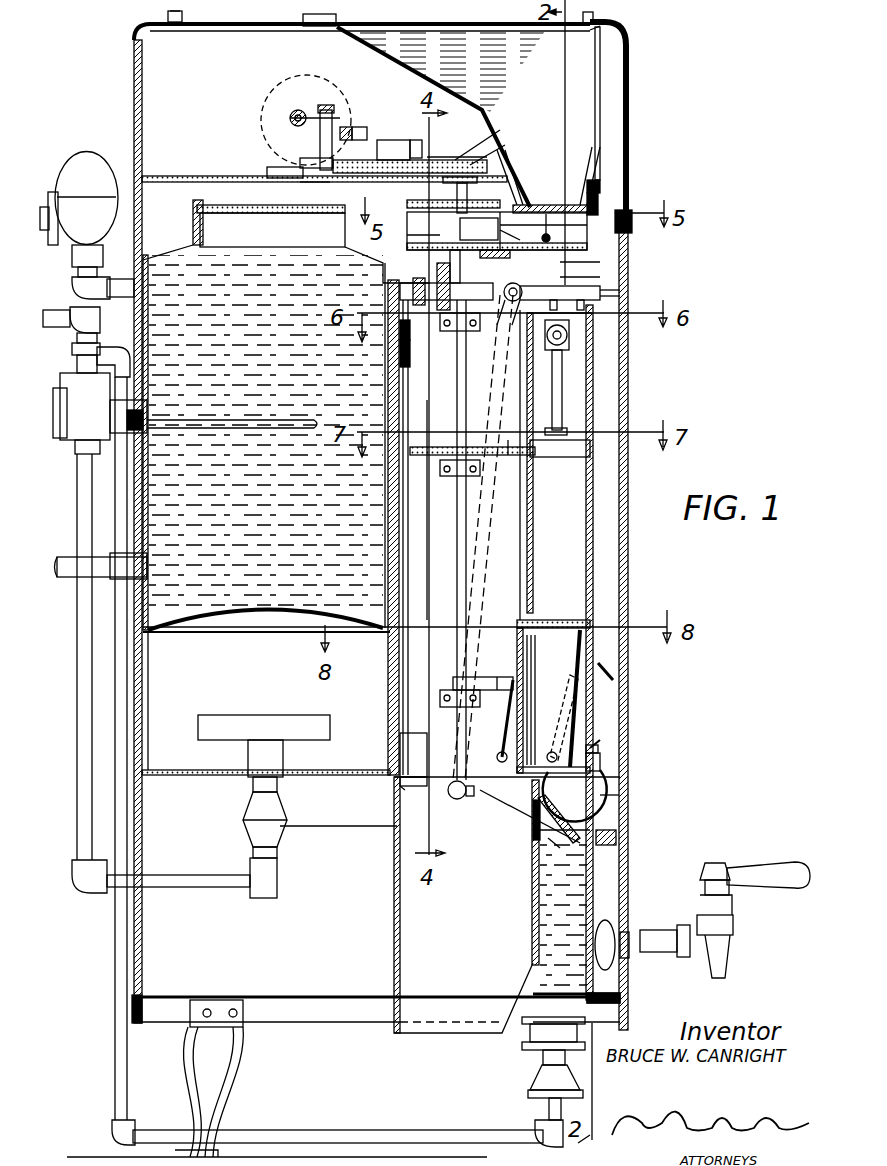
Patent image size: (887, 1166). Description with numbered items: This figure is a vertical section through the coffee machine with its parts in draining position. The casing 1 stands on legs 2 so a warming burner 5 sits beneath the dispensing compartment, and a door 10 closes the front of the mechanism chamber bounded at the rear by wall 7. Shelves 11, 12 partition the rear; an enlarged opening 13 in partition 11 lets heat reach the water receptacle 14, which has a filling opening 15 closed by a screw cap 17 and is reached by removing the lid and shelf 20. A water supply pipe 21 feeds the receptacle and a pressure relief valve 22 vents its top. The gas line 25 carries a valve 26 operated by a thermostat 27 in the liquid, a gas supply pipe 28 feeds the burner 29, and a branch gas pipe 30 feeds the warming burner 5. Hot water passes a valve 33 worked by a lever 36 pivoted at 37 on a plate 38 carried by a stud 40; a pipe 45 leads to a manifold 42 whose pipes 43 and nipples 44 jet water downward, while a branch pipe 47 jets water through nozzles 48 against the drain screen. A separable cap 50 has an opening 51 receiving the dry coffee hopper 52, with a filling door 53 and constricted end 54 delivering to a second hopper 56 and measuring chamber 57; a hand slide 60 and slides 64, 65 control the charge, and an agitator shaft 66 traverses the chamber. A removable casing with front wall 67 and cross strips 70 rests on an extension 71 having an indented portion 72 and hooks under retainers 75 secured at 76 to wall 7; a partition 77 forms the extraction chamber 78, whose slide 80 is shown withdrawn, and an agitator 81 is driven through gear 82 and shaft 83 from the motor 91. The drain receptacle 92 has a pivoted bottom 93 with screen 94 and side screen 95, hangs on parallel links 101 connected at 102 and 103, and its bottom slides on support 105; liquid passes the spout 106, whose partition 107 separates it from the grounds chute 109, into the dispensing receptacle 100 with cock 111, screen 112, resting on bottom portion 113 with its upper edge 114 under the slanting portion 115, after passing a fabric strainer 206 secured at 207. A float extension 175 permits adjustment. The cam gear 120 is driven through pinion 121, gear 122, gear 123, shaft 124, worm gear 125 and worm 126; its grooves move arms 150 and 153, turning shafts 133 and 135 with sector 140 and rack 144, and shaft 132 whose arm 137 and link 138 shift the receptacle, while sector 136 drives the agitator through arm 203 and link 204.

The casing 1 is at (132, 708).
The legs 2 is at (225, 1072).
The warming burner 5 is at (535, 1047).
The rear wall 7 is at (400, 588).
The door 10 is at (628, 582).
The partition 11 is at (152, 632).
The partition 12 is at (172, 775).
The enlarged opening 13 is at (250, 632).
The water receptacle 14 is at (228, 618).
The filling opening 15 is at (220, 228).
The screw cap 17 is at (205, 200).
The lid and shelf 20 is at (173, 176).
The water supply pipe 21 is at (68, 570).
The pressure relief valve 22 is at (80, 160).
The gas line 25 is at (50, 305).
The valve 26 is at (88, 425).
The thermostat 27 is at (185, 425).
The gas supply pipe 28 is at (84, 810).
The burner 29 is at (208, 715).
The branch gas pipe 30 is at (117, 965).
The valve 33 is at (446, 280).
The lever 36 is at (360, 127).
The pivot 37 is at (345, 127).
The plate 38 is at (380, 140).
The stud 40 is at (425, 148).
The manifold 42 is at (496, 325).
The pipes 43 is at (620, 290).
The nipples 44 is at (620, 296).
The pipe 45 is at (515, 283).
The pipe 47 is at (485, 548).
The nozzles 48 is at (466, 800).
The cap 50 is at (628, 55).
The opening 51 is at (605, 30).
The dry coffee hopper 52 is at (600, 80).
The filling door 53 is at (412, 30).
The constricted lower end 54 is at (598, 145).
The second hopper 56 is at (600, 200).
The measuring chamber 57 is at (600, 225).
The hand operable slide 60 is at (548, 200).
The slide 64 is at (440, 217).
The slide 65 is at (500, 246).
The agitator shaft 66 is at (543, 238).
The front wall 67 is at (595, 548).
The cross strips 70 is at (410, 360).
The extension 71 is at (420, 790).
The indented portion 72 is at (410, 786).
The retainers 75 is at (400, 350).
The securing means 76 is at (398, 333).
The partition 77 is at (522, 571).
The extraction chamber 78 is at (592, 385).
The slide 80 is at (510, 465).
The horizontal agitator 81 is at (592, 418).
The gear 82 is at (600, 342).
The horizontal shaft 83 is at (567, 340).
The motor 91 is at (261, 115).
The drain receptacle 92 is at (520, 628).
The pivoted bottom 93 is at (600, 768).
The screen 94 is at (595, 740).
The removable screen 95 is at (592, 708).
The dispensing receptacle 100 is at (535, 910).
The parallel links 101 is at (558, 710).
The link connection 102 is at (577, 680).
The link connection 103 is at (548, 757).
The bottom support 105 is at (610, 795).
The spout 106 is at (558, 845).
The partitioning portion 107 is at (545, 812).
The chute 109 is at (440, 1003).
The cock 111 is at (730, 945).
The screen 112 is at (625, 935).
The shelf-like bottom portion 113 is at (622, 1000).
The upper edge 114 is at (548, 825).
The slanting portion 115 is at (538, 835).
The cam gear 120 is at (392, 160).
The pinion 121 is at (300, 158).
The larger gear 122 is at (267, 168).
The small gear 123 is at (315, 182).
The shaft 124 is at (290, 125).
The worm gear 125 is at (322, 105).
The worm 126 is at (296, 110).
The shaft 132 is at (466, 552).
The shaft 133 is at (462, 237).
The shaft 135 is at (466, 373).
The sector 136 is at (480, 258).
The arm 137 is at (478, 677).
The link 138 is at (497, 677).
The sector 140 is at (432, 207).
The rack 144 is at (432, 447).
The arm 150 is at (458, 157).
The arm 153 is at (485, 158).
The extension 175 is at (605, 845).
The arm 203 is at (600, 262).
The link 204 is at (600, 277).
The fabric strainer 206 is at (619, 804).
The detachable securing 207 is at (600, 755).